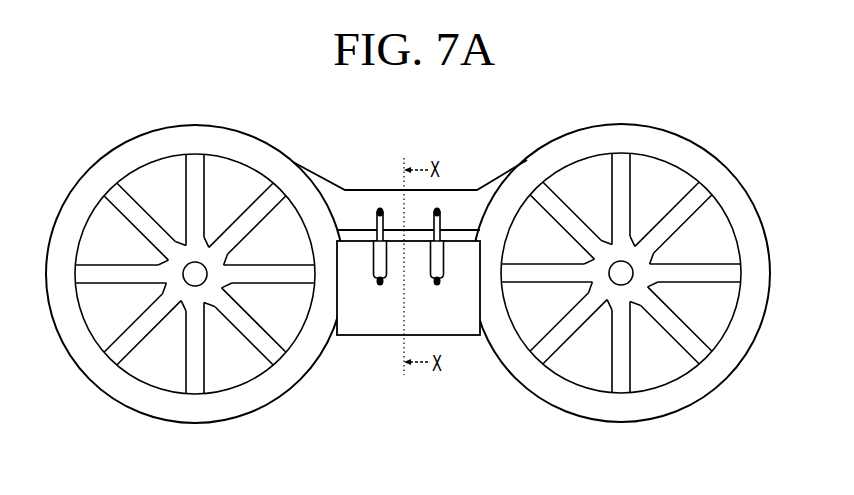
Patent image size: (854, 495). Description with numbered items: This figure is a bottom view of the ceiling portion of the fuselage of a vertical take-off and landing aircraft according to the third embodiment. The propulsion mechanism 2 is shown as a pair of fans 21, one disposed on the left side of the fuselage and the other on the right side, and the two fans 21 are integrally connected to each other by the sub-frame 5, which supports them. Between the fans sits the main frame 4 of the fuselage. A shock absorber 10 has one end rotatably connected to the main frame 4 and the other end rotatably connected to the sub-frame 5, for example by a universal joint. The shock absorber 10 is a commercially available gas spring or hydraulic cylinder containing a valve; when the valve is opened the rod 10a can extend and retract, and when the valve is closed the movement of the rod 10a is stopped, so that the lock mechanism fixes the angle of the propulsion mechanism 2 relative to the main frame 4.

The propulsion mechanism 2 is at (112, 134).
The fan 21 is at (271, 264).
The sub-frame 5 is at (366, 189).
The main frame 4 is at (372, 336).
The shock absorber 10 is at (444, 270).
The rod 10a is at (441, 226).